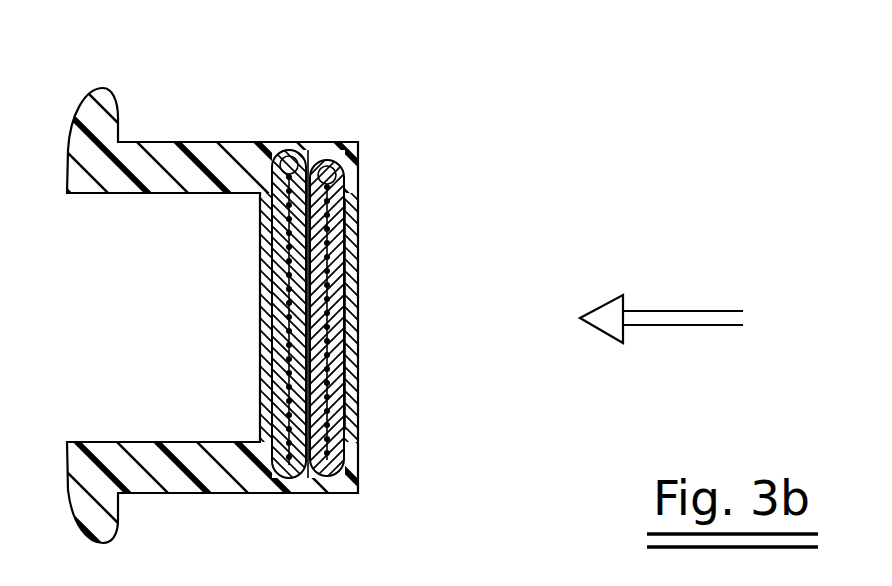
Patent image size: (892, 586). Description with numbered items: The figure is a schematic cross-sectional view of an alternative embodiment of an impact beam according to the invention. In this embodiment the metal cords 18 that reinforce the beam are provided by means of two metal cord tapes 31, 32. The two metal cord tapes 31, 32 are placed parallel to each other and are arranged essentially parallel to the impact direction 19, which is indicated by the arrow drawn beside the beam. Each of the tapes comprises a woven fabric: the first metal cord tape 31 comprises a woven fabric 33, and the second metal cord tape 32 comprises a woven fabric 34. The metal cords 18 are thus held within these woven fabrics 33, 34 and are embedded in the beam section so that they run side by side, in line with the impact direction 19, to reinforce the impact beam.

The metal cords 18 is at (323, 195).
The impact direction 19 is at (700, 323).
The metal cord tape 31 is at (284, 138).
The metal cord tape 32 is at (334, 140).
The woven fabric 33 is at (290, 325).
The woven fabric 34 is at (340, 286).